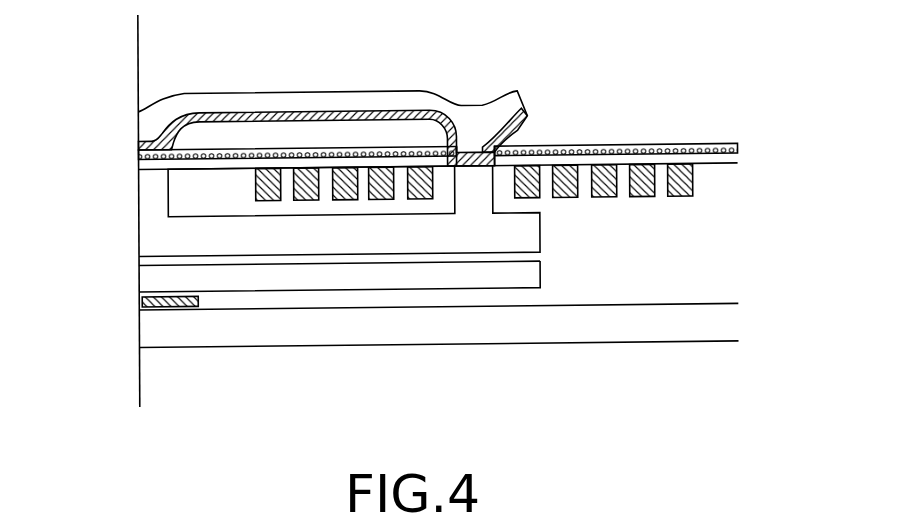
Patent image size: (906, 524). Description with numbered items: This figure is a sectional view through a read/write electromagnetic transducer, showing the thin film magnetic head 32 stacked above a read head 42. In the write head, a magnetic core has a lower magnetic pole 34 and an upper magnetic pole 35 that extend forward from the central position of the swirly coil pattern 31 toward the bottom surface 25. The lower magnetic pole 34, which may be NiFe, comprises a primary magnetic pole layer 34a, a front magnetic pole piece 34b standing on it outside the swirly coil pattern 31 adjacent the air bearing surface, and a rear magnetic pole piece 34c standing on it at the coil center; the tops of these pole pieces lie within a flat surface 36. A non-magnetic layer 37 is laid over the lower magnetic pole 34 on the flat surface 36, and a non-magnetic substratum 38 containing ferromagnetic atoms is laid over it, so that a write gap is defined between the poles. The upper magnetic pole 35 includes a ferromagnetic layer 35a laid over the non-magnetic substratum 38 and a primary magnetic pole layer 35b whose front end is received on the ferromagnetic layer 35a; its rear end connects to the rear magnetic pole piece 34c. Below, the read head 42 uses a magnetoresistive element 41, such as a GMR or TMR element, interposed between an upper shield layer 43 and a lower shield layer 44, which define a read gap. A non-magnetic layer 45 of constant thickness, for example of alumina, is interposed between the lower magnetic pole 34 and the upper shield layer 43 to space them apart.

The bottom surface 25 is at (139, 55).
The swirly coil pattern 31 is at (682, 204).
The thin film magnetic head 32 is at (566, 99).
The lower magnetic pole 34 is at (338, 267).
The primary magnetic pole layer 34a is at (541, 242).
The front magnetic pole piece 34b is at (150, 192).
The rear magnetic pole piece 34c is at (472, 179).
The upper magnetic pole 35 is at (344, 85).
The ferromagnetic layer 35a is at (190, 114).
The primary magnetic pole layer 35b is at (273, 94).
The flat surface 36 is at (586, 174).
The non-magnetic layer 37 is at (139, 166).
The non-magnetic substratum 38 is at (139, 155).
The magnetoresistive element 41 is at (150, 307).
The read head 42 is at (128, 334).
The upper shield layer 43 is at (540, 276).
The lower shield layer 44 is at (636, 348).
The non-magnetic layer 45 is at (139, 265).